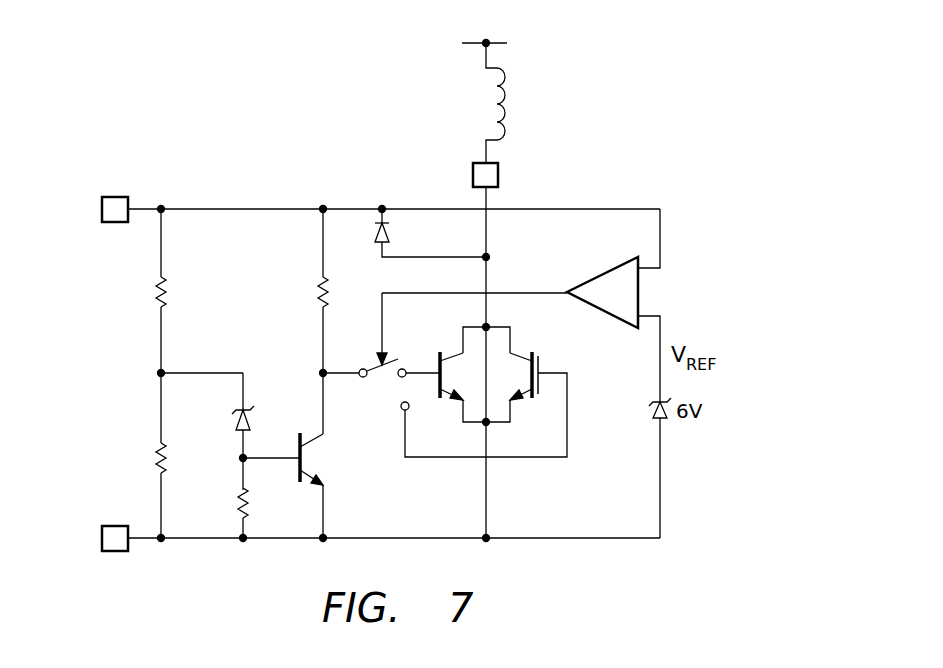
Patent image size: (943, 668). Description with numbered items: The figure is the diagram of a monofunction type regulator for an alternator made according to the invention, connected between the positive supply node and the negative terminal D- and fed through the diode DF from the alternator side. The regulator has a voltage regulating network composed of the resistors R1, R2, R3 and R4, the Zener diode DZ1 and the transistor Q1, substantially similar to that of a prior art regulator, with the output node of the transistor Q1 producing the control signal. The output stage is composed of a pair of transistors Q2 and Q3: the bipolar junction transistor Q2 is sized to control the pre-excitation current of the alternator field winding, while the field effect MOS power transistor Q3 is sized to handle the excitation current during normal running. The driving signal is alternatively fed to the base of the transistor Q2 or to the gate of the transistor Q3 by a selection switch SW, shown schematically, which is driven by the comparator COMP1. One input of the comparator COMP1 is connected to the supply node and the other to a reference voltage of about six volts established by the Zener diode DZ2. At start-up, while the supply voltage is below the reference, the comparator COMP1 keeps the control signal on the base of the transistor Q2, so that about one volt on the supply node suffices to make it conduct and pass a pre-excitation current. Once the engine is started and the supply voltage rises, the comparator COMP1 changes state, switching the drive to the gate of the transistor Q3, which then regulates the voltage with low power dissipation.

The negative supply terminal D- is at (98, 537).
The resistor R1 is at (146, 293).
The resistor R2 is at (146, 458).
The resistor R3 is at (228, 503).
The resistor R4 is at (308, 293).
The Zener diode DZ1 is at (221, 421).
The Zener diode DZ2 is at (637, 410).
The transistor Q1 is at (324, 459).
The bipolar junction transistor Q2 is at (460, 376).
The field effect (MOS) power transistor Q3 is at (516, 376).
The selection switch SW is at (381, 351).
The comparator COMP1 is at (604, 272).
The diode DF is at (470, 176).